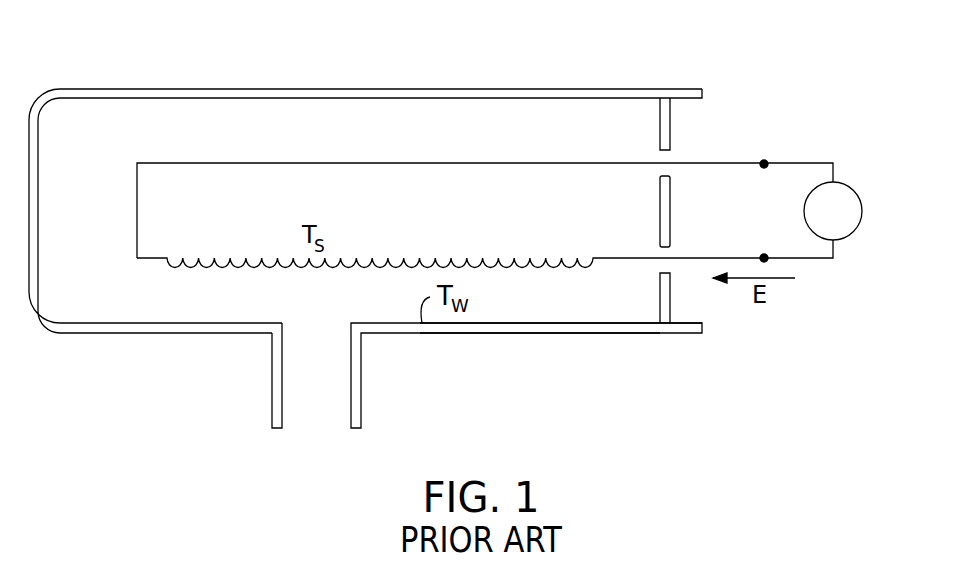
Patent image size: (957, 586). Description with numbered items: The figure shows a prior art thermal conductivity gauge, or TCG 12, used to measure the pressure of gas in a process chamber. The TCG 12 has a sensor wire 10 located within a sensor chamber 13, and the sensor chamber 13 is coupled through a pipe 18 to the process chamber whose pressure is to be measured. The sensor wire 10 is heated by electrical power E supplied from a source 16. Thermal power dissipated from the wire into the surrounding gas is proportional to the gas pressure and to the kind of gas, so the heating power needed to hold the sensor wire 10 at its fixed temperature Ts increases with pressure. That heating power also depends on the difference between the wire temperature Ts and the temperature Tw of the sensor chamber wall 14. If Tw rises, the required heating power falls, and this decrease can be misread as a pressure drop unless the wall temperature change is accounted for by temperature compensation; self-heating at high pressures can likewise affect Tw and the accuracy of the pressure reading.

The sensor wire 10 is at (546, 258).
The TCG 12 is at (645, 56).
The sensor chamber 13 is at (553, 300).
The sensor chamber wall 14 is at (609, 334).
The source 16 is at (853, 192).
The pipe 18 is at (272, 360).